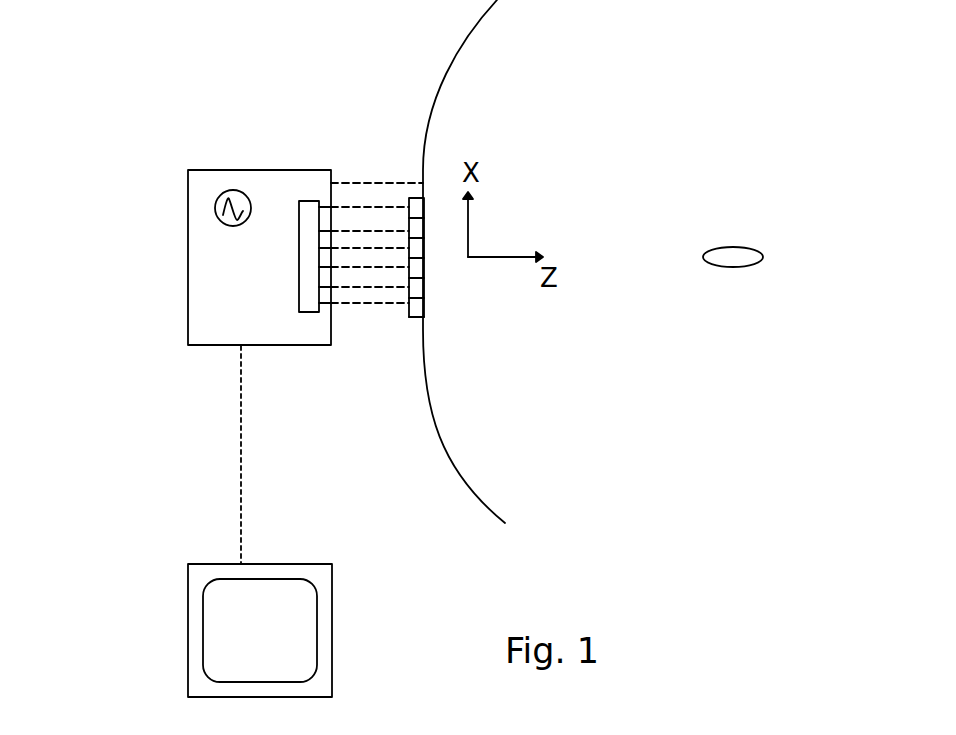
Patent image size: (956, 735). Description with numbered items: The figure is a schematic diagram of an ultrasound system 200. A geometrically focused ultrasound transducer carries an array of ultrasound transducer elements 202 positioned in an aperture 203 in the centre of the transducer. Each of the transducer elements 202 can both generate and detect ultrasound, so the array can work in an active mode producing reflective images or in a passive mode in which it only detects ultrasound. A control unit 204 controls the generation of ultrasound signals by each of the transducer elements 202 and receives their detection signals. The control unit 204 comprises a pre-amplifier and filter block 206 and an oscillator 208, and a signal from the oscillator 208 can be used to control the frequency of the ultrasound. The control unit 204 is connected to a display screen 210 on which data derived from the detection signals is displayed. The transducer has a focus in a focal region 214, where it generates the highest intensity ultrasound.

The ultrasound system 200 is at (158, 329).
The ultrasound transducer elements 202 is at (420, 283).
The aperture 203 is at (423, 315).
The control unit 204 is at (188, 215).
The pre-amplifier and filter block 206 is at (303, 202).
The oscillator 208 is at (229, 190).
The display screen 210 is at (458, 475).
The focal region 214 is at (745, 247).